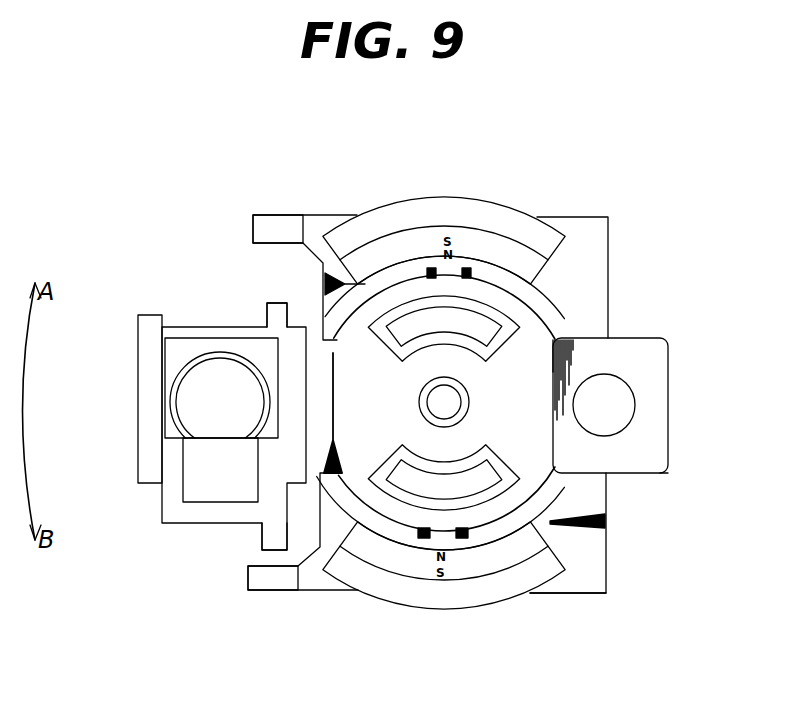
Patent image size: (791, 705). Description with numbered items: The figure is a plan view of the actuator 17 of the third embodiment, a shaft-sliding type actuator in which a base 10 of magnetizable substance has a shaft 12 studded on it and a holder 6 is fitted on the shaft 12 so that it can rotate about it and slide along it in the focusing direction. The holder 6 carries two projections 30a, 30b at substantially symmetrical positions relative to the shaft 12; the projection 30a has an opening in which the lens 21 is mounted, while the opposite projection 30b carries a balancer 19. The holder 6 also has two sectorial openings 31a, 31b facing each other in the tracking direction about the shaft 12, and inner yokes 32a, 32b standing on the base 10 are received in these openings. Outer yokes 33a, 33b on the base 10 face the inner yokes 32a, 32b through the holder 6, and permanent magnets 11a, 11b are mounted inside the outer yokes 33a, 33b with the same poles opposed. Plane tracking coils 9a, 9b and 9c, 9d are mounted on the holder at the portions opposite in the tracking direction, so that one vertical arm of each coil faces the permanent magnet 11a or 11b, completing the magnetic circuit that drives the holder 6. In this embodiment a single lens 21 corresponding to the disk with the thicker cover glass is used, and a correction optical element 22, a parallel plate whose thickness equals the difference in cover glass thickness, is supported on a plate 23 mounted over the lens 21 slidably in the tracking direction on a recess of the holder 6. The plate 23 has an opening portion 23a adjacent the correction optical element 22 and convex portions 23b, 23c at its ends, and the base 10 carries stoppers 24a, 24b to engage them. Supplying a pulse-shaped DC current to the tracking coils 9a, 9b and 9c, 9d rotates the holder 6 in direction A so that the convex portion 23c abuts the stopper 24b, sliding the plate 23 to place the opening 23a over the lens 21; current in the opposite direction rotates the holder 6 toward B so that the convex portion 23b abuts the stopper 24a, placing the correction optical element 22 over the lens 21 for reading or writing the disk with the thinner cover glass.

The holder 6 is at (650, 346).
The tracking coil 9a is at (420, 538).
The tracking coil 9b is at (462, 538).
The tracking coil 9c is at (430, 268).
The tracking coil 9d is at (467, 268).
The base 10 is at (587, 575).
The permanent magnet 11a is at (492, 565).
The permanent magnet 11b is at (576, 228).
The shaft 12 is at (547, 325).
The actuator 17 is at (595, 603).
The balancer 19 is at (628, 405).
The lens 21 is at (192, 394).
The correction optical element 22 is at (198, 487).
The plate 23 is at (208, 522).
The opening portion 23a is at (208, 347).
The convex portion 23b is at (262, 549).
The convex portion 23c is at (276, 304).
The stopper 24a is at (272, 580).
The stopper 24b is at (290, 222).
The projection 30a is at (147, 472).
The projection 30b is at (645, 462).
The sectorial opening 31a is at (522, 479).
The sectorial opening 31b is at (480, 313).
The inner yoke 32a is at (484, 485).
The inner yoke 32b is at (452, 397).
The outer yoke 33a is at (428, 602).
The outer yoke 33b is at (523, 256).